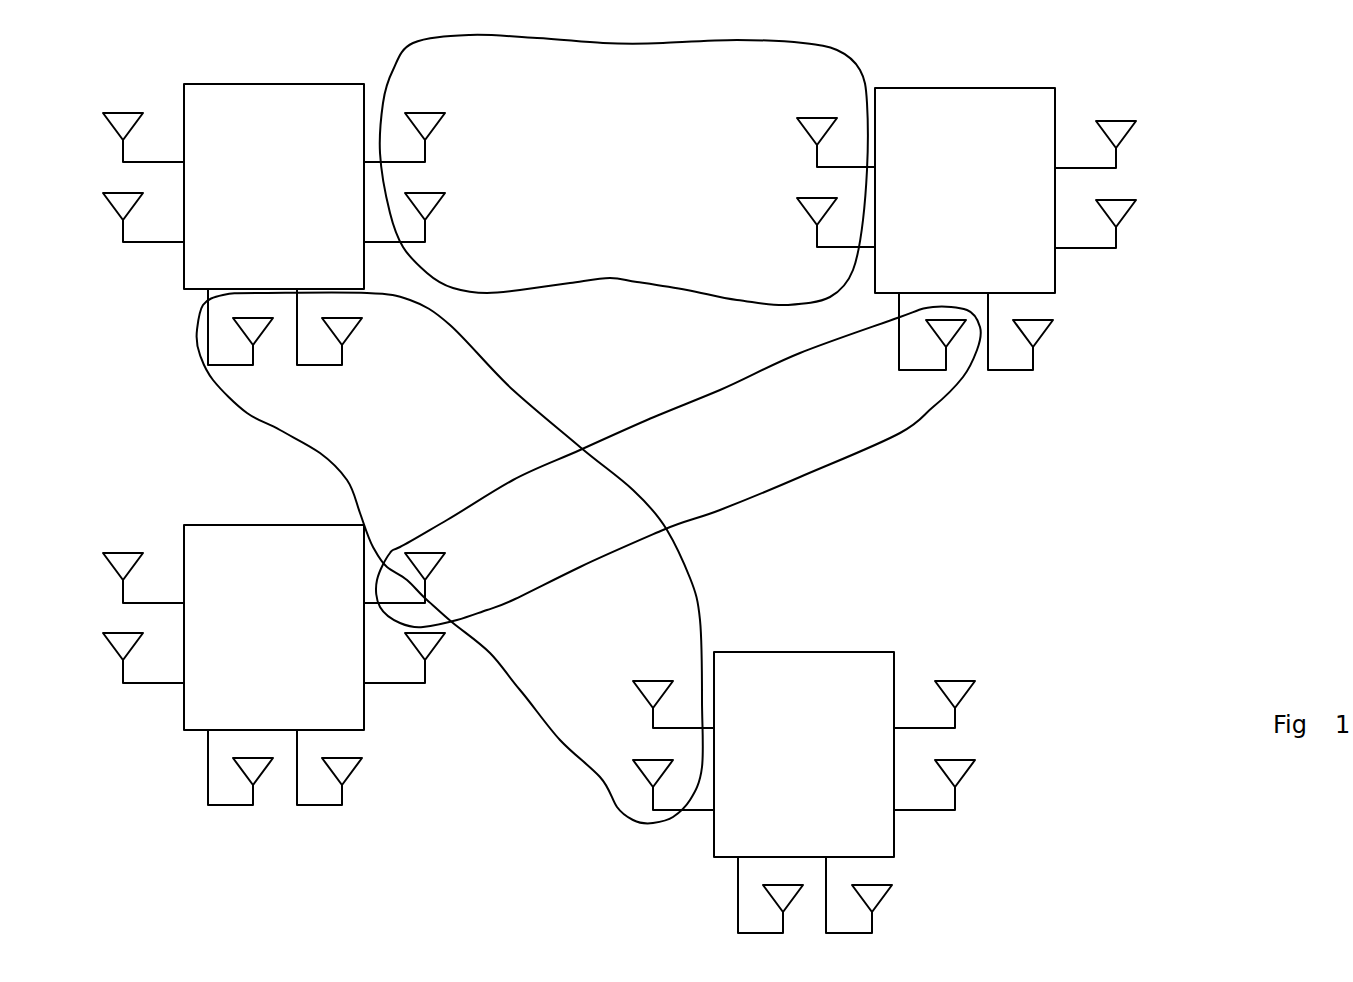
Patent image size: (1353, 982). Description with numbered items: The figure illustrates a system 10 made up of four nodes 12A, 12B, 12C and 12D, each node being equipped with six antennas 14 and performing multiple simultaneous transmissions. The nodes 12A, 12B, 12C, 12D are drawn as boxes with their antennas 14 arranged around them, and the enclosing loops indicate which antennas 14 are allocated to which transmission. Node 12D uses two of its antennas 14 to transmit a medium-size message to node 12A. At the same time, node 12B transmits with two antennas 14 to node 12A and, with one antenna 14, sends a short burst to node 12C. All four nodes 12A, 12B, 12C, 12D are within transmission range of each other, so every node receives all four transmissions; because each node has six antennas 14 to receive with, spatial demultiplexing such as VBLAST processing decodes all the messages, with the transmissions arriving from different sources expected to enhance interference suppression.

The system 10 is at (1060, 498).
The node 12A is at (274, 186).
The node 12B is at (965, 190).
The node 12C is at (274, 627).
The node 12D is at (804, 754).
The antenna 14 is at (128, 118).